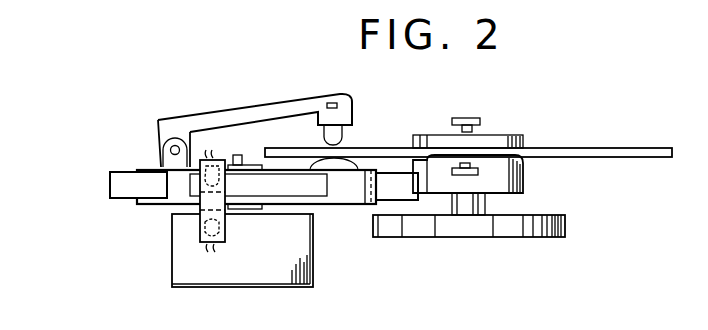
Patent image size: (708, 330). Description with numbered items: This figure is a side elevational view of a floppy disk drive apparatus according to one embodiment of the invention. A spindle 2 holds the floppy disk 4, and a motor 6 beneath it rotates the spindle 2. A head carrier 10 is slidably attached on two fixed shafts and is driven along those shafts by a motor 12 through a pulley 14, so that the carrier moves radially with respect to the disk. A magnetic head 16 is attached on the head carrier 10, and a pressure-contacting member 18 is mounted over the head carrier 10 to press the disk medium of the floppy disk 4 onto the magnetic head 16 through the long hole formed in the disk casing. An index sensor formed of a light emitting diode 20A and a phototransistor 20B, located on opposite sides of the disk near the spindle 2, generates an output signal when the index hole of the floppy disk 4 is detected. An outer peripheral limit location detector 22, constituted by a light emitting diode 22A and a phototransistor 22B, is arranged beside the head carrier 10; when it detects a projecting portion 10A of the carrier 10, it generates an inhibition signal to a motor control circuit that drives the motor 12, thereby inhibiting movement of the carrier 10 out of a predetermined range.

The spindle 2 is at (523, 171).
The floppy disk 4 is at (624, 148).
The motor 6 is at (503, 232).
The head carrier 10 is at (352, 205).
The projecting portion 10A is at (250, 197).
The motor 12 is at (260, 279).
The pulley 14 is at (244, 165).
The magnetic head 16 is at (346, 167).
The pressure-contacting member 18 is at (328, 94).
The light emitting diode 20A is at (478, 175).
The phototransistor 20B is at (468, 117).
The outer peripheral limit location detector 22 is at (231, 232).
The light emitting diode 22A is at (204, 232).
The phototransistor 22B is at (207, 162).